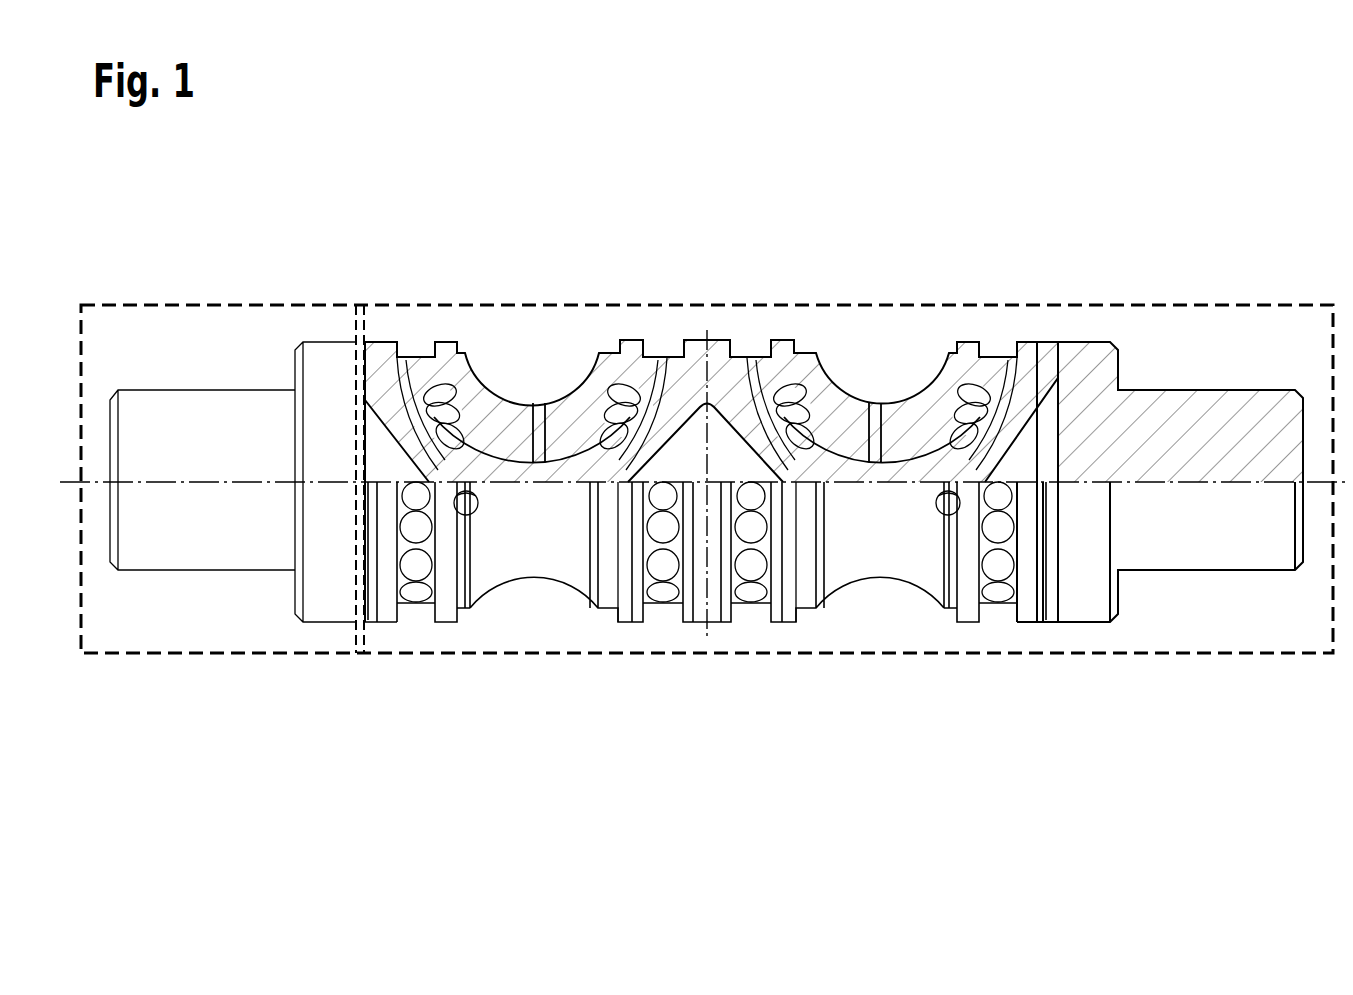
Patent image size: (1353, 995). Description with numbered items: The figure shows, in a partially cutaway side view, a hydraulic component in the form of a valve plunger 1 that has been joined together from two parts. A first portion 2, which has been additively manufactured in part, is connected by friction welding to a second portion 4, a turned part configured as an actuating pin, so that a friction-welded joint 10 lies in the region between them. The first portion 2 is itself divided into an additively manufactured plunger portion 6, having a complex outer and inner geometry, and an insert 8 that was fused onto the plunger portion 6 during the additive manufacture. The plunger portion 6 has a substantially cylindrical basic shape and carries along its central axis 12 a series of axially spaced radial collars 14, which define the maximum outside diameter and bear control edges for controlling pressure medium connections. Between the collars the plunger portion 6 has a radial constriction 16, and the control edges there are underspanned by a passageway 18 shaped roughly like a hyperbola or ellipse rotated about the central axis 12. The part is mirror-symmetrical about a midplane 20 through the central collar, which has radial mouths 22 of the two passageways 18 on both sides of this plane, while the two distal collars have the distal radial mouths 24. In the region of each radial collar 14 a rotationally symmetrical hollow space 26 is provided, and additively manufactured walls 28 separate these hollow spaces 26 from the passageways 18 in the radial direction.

The valve plunger 1 is at (1194, 176).
The first portion 2 is at (1180, 303).
The second portion 4 is at (319, 303).
The plunger portion 6 is at (755, 631).
The insert 8 is at (1207, 590).
The friction-welded joint 10 is at (357, 662).
The central axis 12 is at (198, 478).
The radial collars 14 is at (441, 315).
The radial constriction 16 is at (537, 608).
The passageway 18 is at (567, 425).
The midplane 20 is at (713, 632).
The radial mouths 22 is at (653, 322).
The distal radial mouths 24 is at (406, 322).
The hollow space 26 is at (392, 457).
The walls 28 is at (582, 465).